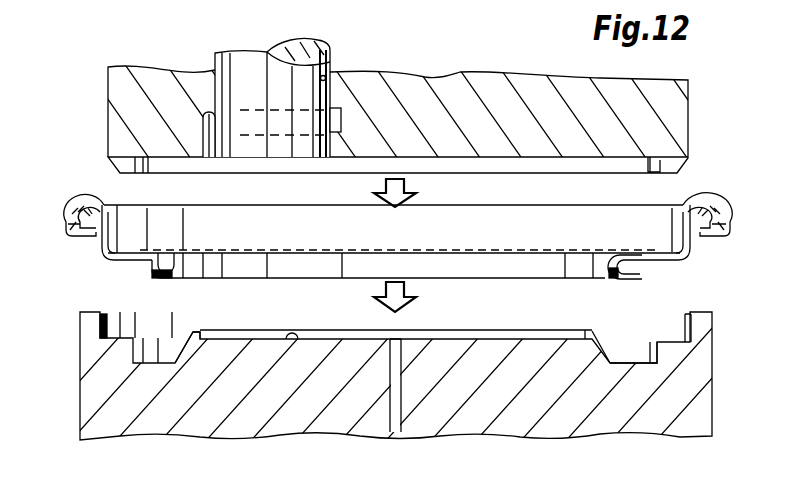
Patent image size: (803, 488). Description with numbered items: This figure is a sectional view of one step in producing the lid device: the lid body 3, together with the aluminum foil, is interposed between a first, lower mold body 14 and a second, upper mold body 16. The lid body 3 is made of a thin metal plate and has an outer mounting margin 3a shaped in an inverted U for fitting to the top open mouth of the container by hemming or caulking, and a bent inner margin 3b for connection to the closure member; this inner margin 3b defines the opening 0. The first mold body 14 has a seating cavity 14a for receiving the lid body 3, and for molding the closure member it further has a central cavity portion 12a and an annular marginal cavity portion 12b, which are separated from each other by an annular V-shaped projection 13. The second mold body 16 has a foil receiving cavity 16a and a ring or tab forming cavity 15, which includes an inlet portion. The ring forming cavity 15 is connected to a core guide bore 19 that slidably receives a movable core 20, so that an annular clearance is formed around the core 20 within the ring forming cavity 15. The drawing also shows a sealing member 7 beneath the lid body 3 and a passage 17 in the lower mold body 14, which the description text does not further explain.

The movable core 20 is at (255, 72).
The core guide bore 19 is at (326, 76).
The second mold body 16 is at (484, 87).
The ring forming cavity 15 is at (203, 117).
The foil receiving cavity 16a is at (652, 182).
The outer mounting margin 3a is at (83, 207).
The sealing member 7 is at (553, 250).
The bent inner margin 3b is at (152, 278).
The opening 0 is at (613, 282).
The lid body 3 is at (704, 257).
The seating cavity 14a is at (105, 308).
The first mold body 14 is at (100, 396).
The annular V-shaped projection 13 is at (195, 352).
The central cavity portion 12a is at (296, 341).
The vent hole 17 is at (400, 437).
The annular marginal cavity portion 12b is at (633, 352).